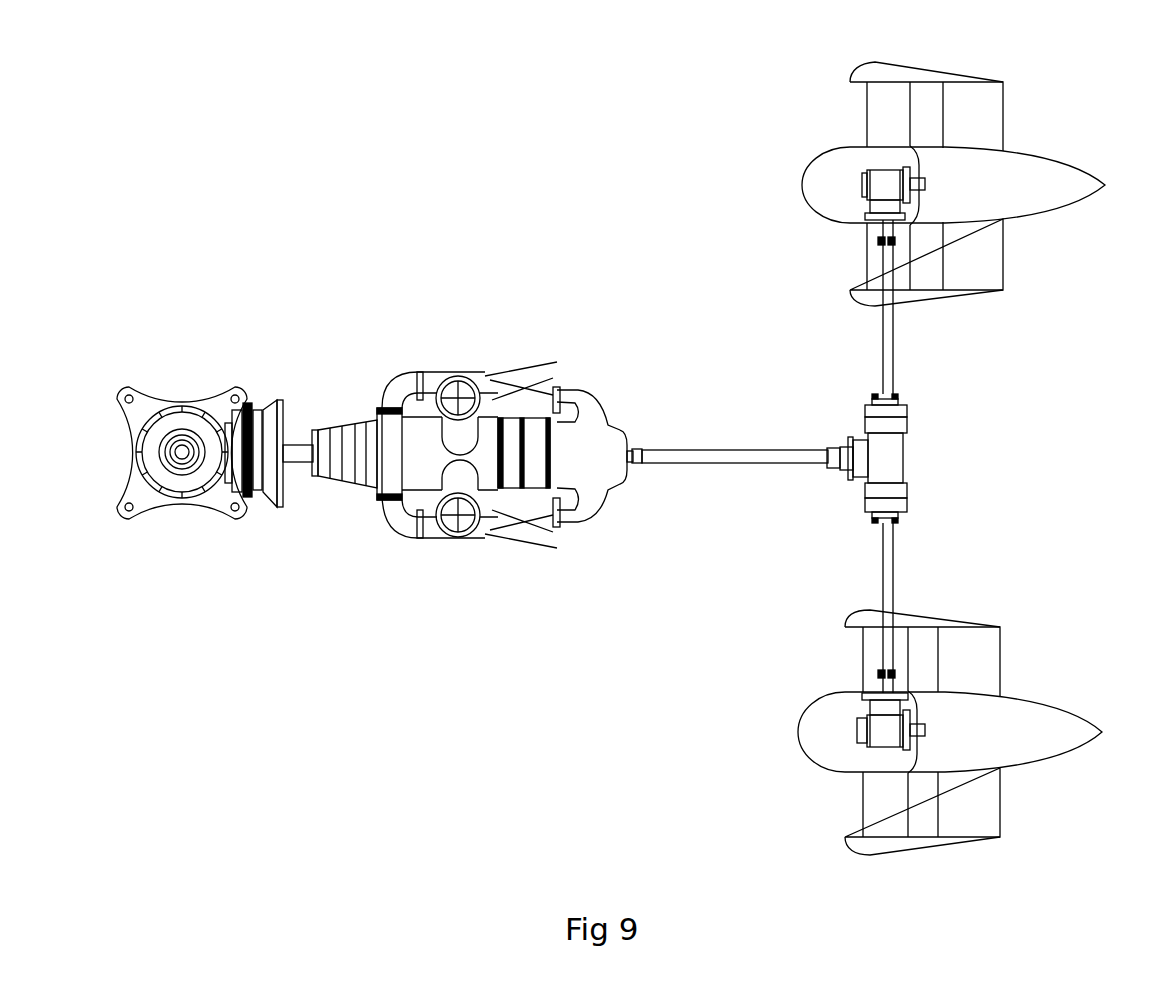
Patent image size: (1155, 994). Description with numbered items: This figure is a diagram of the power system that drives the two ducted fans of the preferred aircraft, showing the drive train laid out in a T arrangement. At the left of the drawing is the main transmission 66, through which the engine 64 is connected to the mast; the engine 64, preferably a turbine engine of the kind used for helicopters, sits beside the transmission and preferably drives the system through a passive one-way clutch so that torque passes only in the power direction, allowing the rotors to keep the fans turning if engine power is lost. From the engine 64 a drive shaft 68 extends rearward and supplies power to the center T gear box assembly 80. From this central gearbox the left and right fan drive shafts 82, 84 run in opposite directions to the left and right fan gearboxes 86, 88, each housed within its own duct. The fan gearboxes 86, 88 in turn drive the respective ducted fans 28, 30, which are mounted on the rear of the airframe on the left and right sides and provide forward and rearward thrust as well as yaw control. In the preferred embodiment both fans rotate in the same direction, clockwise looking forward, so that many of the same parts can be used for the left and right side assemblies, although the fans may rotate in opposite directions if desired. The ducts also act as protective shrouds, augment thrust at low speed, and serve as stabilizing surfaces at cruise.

The ducted fan 28 is at (925, 858).
The ducted fan 30 is at (940, 65).
The engine 64 is at (607, 500).
The main transmission 66 is at (185, 405).
The drive shaft 68 is at (697, 448).
The center "T" gear box assembly 80 is at (907, 473).
The left fan drive shaft 82 is at (892, 577).
The right fan drive shaft 84 is at (890, 325).
The left fan gearbox 86 is at (880, 753).
The right fan gearbox 88 is at (885, 165).